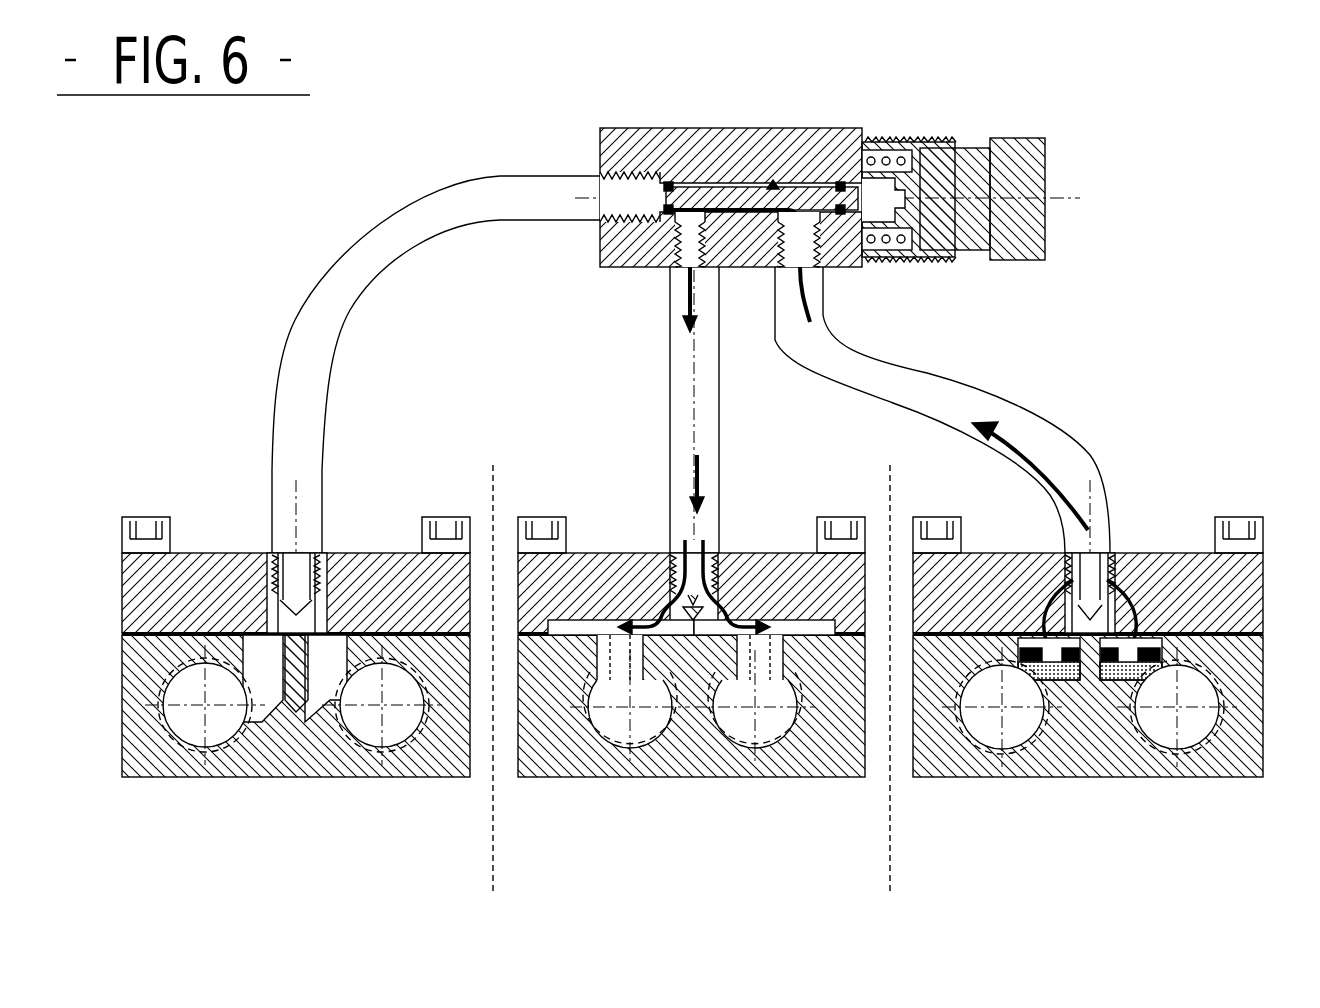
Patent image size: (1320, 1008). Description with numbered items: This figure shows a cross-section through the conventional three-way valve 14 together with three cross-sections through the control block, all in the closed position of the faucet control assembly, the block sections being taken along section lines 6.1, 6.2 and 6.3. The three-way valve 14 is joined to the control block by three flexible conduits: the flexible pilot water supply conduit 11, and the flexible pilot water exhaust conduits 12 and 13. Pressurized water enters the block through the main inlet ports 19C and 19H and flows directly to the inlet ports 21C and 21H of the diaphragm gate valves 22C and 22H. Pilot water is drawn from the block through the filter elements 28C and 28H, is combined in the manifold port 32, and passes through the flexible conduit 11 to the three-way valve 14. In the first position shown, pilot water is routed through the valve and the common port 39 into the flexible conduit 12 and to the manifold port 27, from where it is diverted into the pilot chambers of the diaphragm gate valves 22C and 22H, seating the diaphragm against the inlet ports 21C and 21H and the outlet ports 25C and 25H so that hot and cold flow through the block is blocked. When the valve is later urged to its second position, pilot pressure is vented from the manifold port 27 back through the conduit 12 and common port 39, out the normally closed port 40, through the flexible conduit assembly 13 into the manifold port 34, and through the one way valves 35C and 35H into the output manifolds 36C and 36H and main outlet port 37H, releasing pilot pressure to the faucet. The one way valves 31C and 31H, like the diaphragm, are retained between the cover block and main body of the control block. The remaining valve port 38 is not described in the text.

The three-way valve 14 is at (822, 192).
The normally closed port 40 is at (576, 168).
The common port 39 is at (624, 265).
The outlet port 38 is at (855, 265).
The flexible pilot water exhaust conduit 13 is at (436, 364).
The flexible pilot water exhaust conduit 12 is at (644, 410).
The flexible pilot water supply conduit 11 is at (942, 433).
The manifold port 27 is at (726, 470).
The manifold port 32 is at (1066, 476).
The section line 6.3— 6.3 is at (283, 647).
The section line 6.2— 6.2 is at (686, 642).
The section line 6.1— 6.1 is at (1094, 649).
The manifold port 34 is at (302, 530).
The one way valve 35H is at (241, 557).
The one way valve 35C is at (357, 557).
The output manifold 36H is at (246, 736).
The output manifold 36C is at (351, 737).
The main outlet port 37H is at (292, 764).
The diaphragm gate valve 22H is at (621, 558).
The diaphragm gate valve 22C is at (764, 558).
The inlet port 21H is at (590, 734).
The inlet port 21C is at (793, 734).
The outlet port 25H is at (630, 761).
The outlet port 25C is at (755, 761).
The one way valve 31H is at (1033, 605).
The one way valve 31C is at (1152, 594).
The filter element 28H is at (1040, 738).
The filter element 28C is at (1139, 738).
The main inlet port 19H is at (980, 767).
The main inlet port 19C is at (1197, 767).